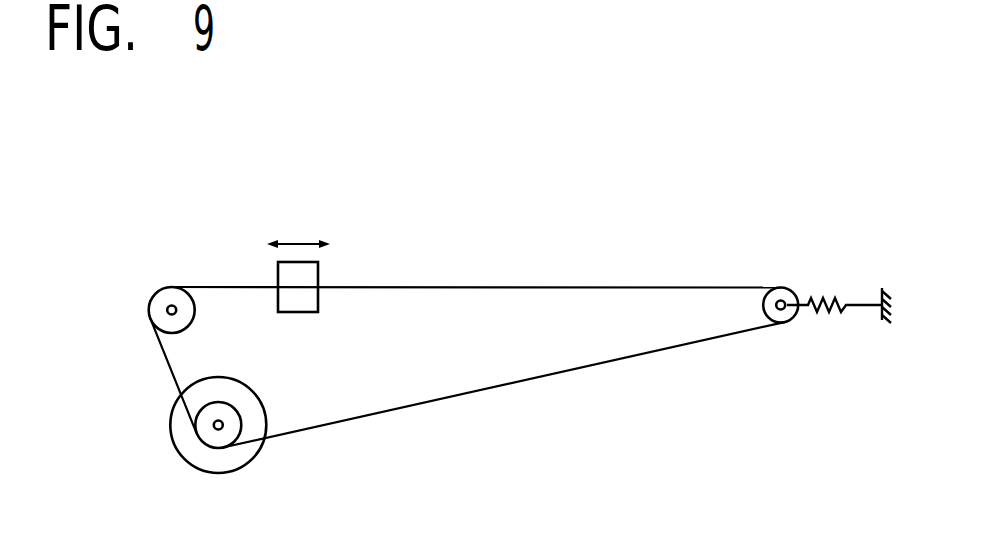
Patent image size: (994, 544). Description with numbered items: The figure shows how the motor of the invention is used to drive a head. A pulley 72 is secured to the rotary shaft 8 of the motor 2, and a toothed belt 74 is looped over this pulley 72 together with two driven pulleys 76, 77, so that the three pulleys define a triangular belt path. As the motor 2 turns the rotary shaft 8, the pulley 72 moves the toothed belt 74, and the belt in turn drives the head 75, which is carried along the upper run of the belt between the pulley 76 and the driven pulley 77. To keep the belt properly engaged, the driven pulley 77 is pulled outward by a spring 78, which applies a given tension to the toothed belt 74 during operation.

The motor 2 is at (242, 457).
The rotary shaft 8 is at (217, 429).
The pulley 72 is at (203, 419).
The toothed belt 74 is at (548, 375).
The head 75 is at (315, 275).
The driven pulley 76 is at (156, 310).
The driven pulley 77 is at (783, 315).
The spring 78 is at (842, 300).